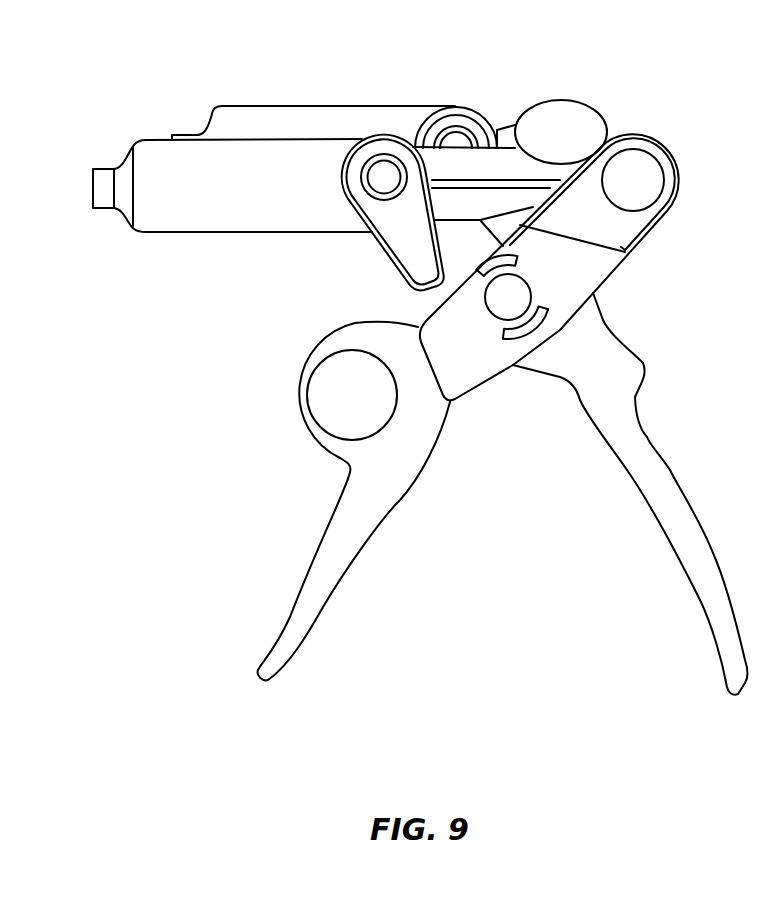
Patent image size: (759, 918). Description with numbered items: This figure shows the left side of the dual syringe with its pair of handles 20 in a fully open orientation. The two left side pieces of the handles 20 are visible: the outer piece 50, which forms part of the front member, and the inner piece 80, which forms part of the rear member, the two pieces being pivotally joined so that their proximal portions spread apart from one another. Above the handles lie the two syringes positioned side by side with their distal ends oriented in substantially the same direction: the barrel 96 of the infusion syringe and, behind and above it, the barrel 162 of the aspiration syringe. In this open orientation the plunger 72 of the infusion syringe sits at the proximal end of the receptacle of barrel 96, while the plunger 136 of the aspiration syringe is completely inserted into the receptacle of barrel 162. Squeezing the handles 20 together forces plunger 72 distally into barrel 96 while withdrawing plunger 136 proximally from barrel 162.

The pair of handles 20 is at (242, 419).
The outer piece 50 is at (335, 578).
The plunger 72 is at (515, 163).
The inner piece 80 is at (667, 500).
The barrel 96 is at (218, 210).
The plunger 136 is at (503, 128).
The barrel 162 is at (290, 125).